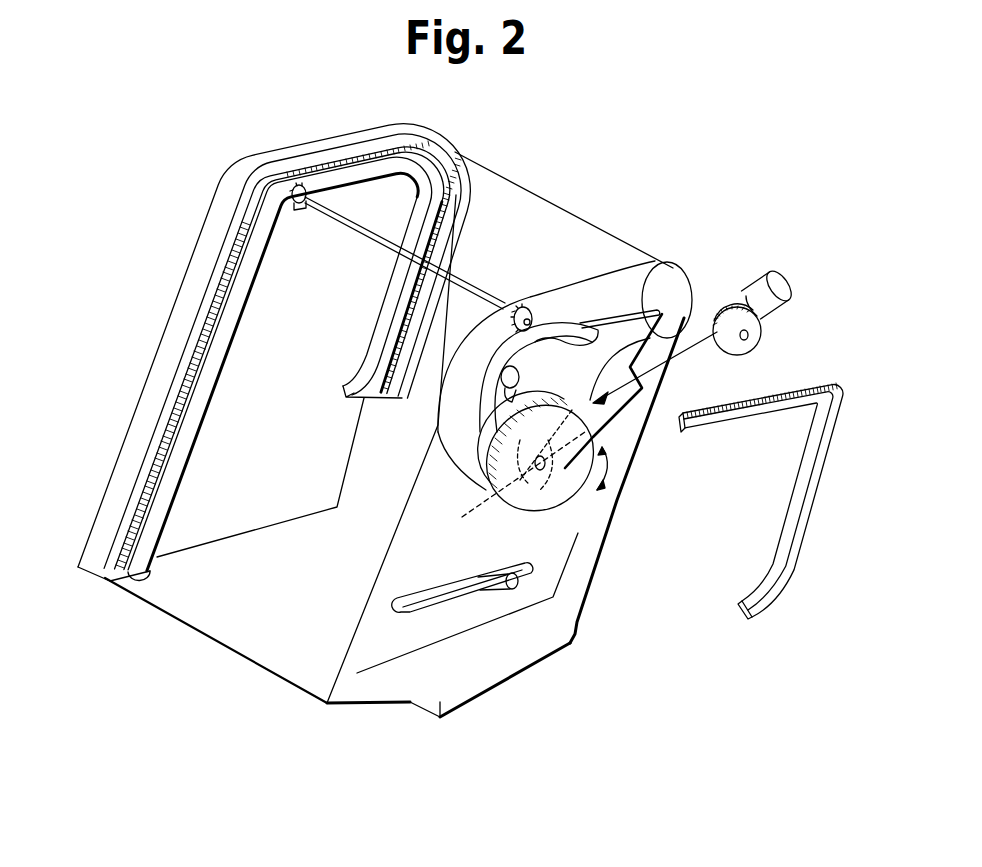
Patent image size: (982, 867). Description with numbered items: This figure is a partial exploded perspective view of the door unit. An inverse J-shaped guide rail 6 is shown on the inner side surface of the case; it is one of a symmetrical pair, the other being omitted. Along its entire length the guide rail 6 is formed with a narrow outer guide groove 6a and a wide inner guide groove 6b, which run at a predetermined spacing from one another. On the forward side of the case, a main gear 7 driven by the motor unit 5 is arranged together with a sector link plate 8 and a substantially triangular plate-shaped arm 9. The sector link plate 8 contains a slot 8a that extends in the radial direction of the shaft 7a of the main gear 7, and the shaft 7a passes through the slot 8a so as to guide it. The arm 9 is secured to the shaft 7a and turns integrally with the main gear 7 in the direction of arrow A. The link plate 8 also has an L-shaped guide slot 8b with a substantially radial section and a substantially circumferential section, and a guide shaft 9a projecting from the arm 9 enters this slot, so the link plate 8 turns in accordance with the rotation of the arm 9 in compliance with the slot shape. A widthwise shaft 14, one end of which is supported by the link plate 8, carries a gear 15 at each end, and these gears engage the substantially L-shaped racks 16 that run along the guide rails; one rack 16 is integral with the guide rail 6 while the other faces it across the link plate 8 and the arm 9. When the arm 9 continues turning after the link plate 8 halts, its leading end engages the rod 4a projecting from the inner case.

The rod 4a is at (502, 572).
The motor unit 5 is at (772, 272).
The guide rail 6 is at (188, 356).
The outer guide groove 6a is at (125, 574).
The inner guide groove 6b is at (141, 576).
The main gear 7 is at (552, 508).
The shaft 7a is at (552, 477).
The sector link plate 8 is at (622, 320).
The slot 8a is at (460, 538).
The L-shaped guide slot 8b is at (567, 326).
The arm 9 is at (668, 292).
The guide shaft 9a is at (688, 322).
The shaft 14 is at (357, 236).
The gear 15 is at (298, 186).
The rack 16 is at (823, 384).
The arrow A is at (620, 468).